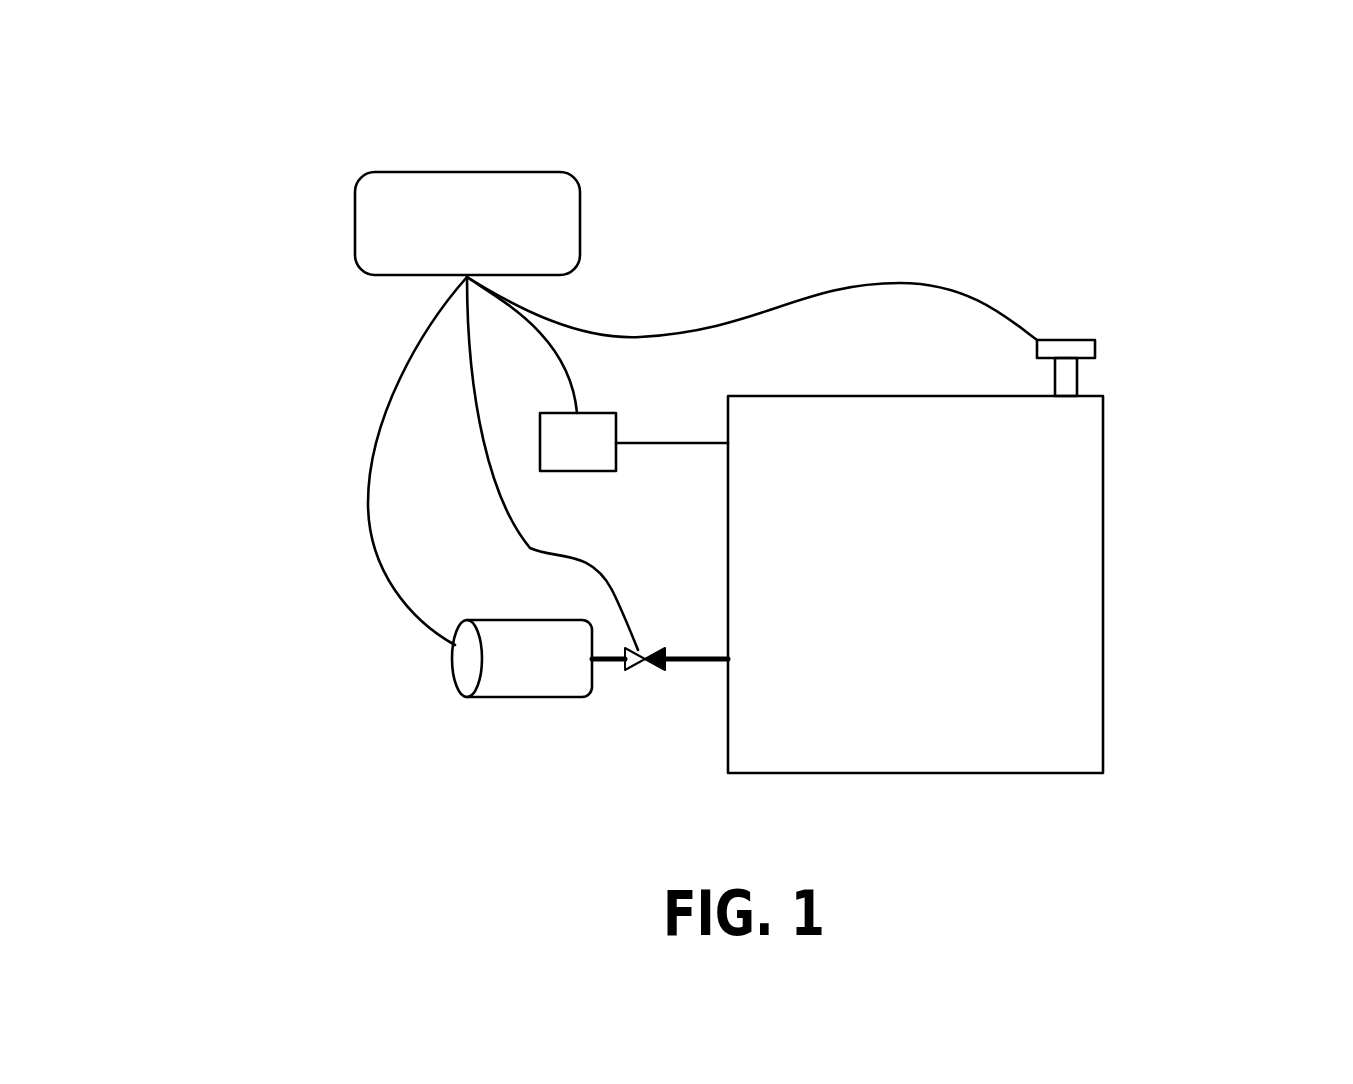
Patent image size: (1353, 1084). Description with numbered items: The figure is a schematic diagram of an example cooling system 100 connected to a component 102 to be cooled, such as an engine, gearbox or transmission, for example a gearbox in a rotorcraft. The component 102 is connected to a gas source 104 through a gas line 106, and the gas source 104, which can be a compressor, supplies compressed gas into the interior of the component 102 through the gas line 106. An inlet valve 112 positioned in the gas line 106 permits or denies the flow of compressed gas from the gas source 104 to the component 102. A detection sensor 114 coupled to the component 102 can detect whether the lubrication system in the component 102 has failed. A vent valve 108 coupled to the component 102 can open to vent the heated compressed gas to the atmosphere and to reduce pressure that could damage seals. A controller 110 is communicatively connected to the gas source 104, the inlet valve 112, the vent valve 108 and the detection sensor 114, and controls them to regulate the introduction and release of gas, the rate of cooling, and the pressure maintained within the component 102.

The cooling system 100 is at (278, 120).
The component 102 is at (945, 596).
The gas source 104 is at (493, 697).
The gas line 106 is at (695, 672).
The vent valve 108 is at (1095, 348).
The controller 110 is at (495, 241).
The inlet valve 112 is at (632, 670).
The detection sensor 114 is at (616, 463).